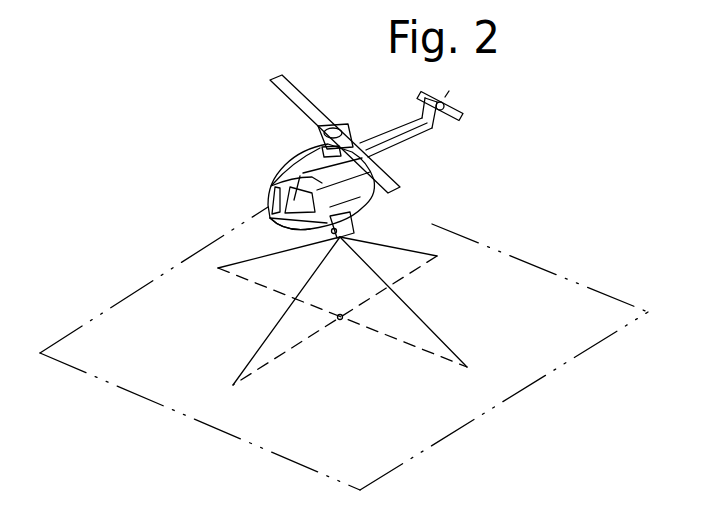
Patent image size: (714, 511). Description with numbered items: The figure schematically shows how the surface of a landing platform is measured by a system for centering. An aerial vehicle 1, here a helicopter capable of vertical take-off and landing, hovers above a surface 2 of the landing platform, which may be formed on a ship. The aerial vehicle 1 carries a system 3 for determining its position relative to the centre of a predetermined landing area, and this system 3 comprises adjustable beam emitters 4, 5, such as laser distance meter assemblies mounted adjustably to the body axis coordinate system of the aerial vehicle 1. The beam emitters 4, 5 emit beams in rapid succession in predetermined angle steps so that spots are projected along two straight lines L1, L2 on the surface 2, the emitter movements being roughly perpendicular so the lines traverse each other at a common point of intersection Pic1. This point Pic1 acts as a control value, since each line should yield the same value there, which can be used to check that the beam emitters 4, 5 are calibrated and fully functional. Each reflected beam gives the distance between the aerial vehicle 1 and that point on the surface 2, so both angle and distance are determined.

The aerial vehicle 1 is at (345, 158).
The surface 2 is at (553, 268).
The system 3 is at (350, 223).
The beam emitter 4 is at (278, 238).
The beam emitter 5 is at (340, 232).
The straight line L1 is at (412, 270).
The straight line L2 is at (420, 350).
The point of intersection Pic1 is at (340, 320).